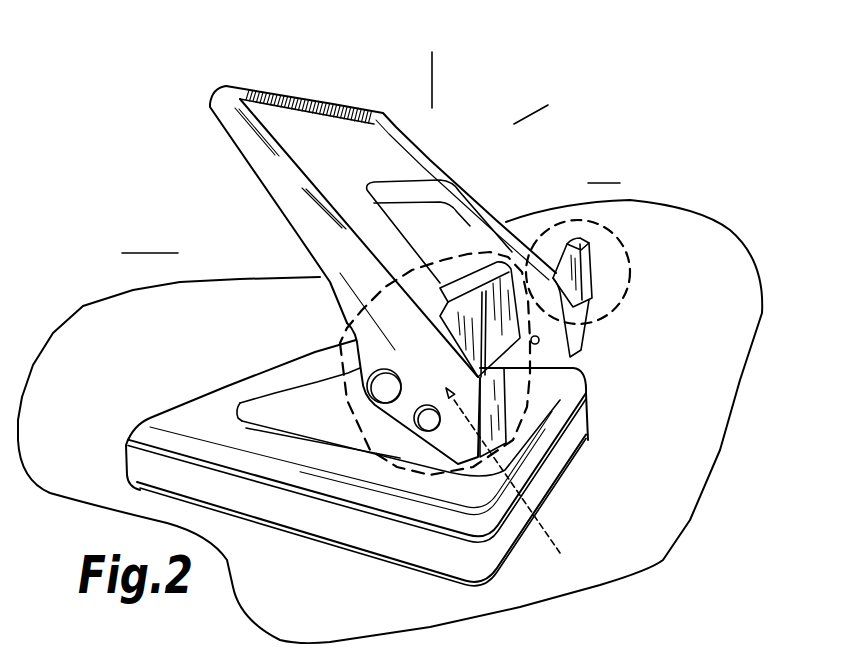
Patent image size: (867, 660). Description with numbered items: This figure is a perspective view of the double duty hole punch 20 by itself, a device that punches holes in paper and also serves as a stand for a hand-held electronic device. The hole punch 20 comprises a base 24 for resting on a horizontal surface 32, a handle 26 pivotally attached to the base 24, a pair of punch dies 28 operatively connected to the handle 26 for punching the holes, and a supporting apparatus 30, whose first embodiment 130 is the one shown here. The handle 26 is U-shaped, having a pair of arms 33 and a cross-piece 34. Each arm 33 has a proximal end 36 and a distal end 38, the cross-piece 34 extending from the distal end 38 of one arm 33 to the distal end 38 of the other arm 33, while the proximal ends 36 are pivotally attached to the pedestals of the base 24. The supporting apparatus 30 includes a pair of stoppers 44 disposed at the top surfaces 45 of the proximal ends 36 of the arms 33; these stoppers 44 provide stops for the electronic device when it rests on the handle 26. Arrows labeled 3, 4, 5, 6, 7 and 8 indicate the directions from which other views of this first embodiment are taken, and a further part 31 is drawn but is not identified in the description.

The double duty hole punch 20 is at (387, 314).
The base 24 is at (369, 562).
The handle 26 is at (230, 152).
The pair of punch dies 28 is at (509, 486).
The supporting apparatus 30 is at (466, 264).
The first embodiment of the supporting apparatus 130 is at (502, 267).
The stationary jaw 31 is at (328, 420).
The horizontal surface 32 is at (118, 346).
The pair of arms 33 is at (442, 217).
The cross-piece 34 is at (306, 112).
The pair of proximal ends 36 is at (440, 402).
The pair of distal ends 38 is at (445, 174).
The pair of stoppers 44 is at (584, 263).
The top surfaces 45 is at (426, 393).
The detail view indicator 3 is at (330, 330).
The section line indicator 4 is at (436, 64).
The section line indicator 5 is at (619, 183).
The section line indicator 6 is at (542, 100).
The section line indicator 7 is at (139, 256).
The detail view indicator 8 is at (620, 313).